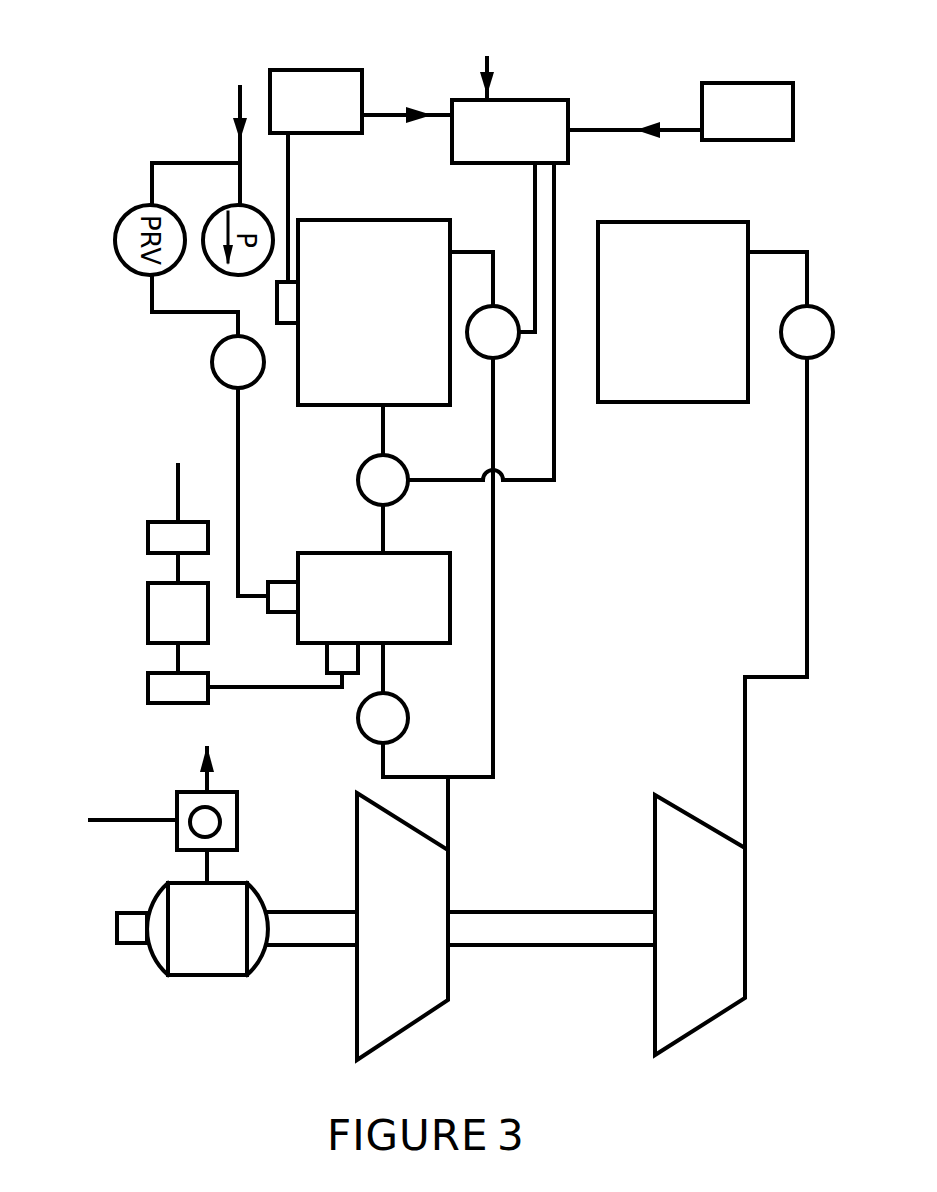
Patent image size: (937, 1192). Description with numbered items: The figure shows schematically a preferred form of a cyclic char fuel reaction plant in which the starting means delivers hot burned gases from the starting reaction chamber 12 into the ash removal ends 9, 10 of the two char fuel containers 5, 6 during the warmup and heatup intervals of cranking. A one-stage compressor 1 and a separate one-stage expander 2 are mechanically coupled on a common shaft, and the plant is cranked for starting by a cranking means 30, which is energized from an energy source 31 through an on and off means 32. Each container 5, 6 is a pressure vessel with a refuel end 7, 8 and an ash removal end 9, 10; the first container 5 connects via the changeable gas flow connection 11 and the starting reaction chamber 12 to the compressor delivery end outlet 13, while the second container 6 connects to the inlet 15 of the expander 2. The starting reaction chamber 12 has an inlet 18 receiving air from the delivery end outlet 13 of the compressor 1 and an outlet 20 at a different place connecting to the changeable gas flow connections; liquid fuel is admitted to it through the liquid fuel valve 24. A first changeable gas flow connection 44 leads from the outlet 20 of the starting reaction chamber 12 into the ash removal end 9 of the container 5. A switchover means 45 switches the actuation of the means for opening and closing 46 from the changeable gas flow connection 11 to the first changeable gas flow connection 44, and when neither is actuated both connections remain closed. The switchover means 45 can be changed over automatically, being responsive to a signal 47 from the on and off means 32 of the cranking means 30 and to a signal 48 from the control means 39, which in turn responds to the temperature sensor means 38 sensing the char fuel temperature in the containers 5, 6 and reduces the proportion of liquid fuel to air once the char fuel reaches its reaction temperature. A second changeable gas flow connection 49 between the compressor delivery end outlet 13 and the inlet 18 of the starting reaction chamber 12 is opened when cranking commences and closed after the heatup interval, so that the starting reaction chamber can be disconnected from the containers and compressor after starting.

The compressor means 1 is at (372, 1025).
The expander means 2 is at (680, 1000).
The pressure vessel container 5 is at (380, 307).
The pressure vessel container 6 is at (683, 305).
The refuel end 7 is at (352, 237).
The refuel end 8 is at (640, 240).
The ash removal end 9 is at (342, 388).
The ash removal end 10 is at (710, 385).
The changeable gas flow connection 11 is at (502, 353).
The starting reaction chamber 12 is at (415, 612).
The compressor delivery end outlet 13 is at (450, 830).
The expander inlet 15 is at (748, 822).
The starting reaction chamber inlet 18 is at (386, 670).
The starting reaction chamber outlet 20 is at (386, 528).
The liquid fuel valve 24 is at (215, 377).
The cranking means 30 is at (205, 958).
The energy source 31 is at (150, 823).
The means for turning the cranking means on and off 32 is at (225, 833).
The temperature sensor means 38 is at (277, 302).
The control means 39 is at (318, 92).
The first changeable gas flow connection 44 is at (400, 462).
The switchover means 45 is at (497, 128).
The means for opening and closing 46 is at (723, 107).
The signal 47 is at (490, 78).
The signal 48 is at (385, 112).
The second changeable gas flow connection 49 is at (366, 740).